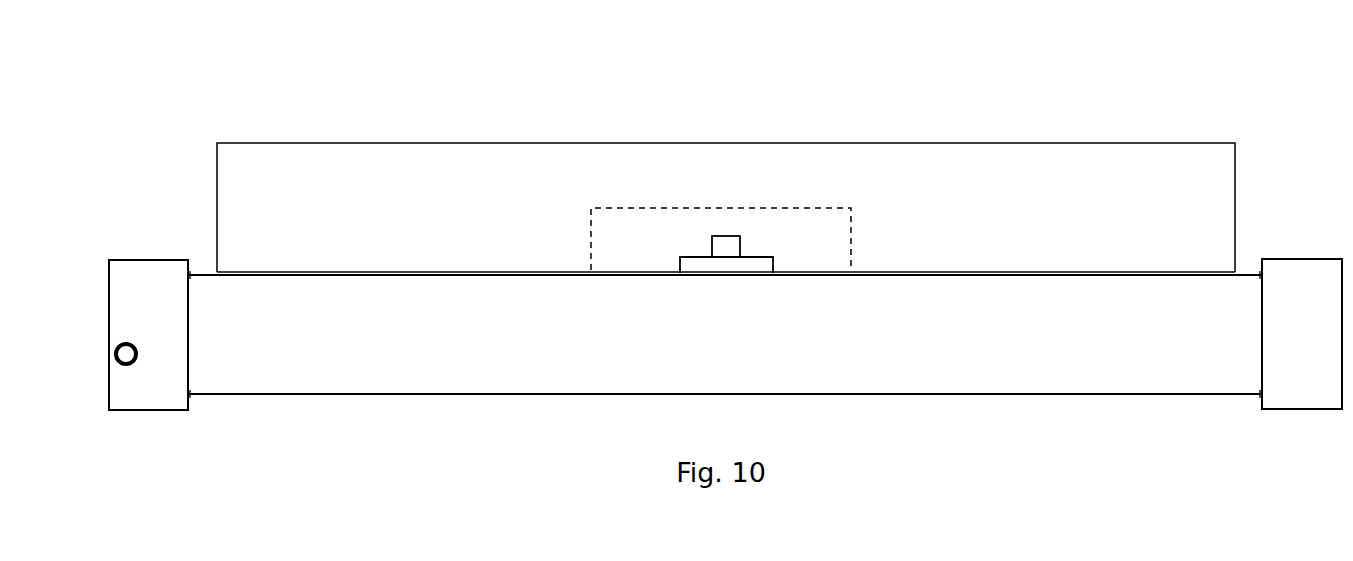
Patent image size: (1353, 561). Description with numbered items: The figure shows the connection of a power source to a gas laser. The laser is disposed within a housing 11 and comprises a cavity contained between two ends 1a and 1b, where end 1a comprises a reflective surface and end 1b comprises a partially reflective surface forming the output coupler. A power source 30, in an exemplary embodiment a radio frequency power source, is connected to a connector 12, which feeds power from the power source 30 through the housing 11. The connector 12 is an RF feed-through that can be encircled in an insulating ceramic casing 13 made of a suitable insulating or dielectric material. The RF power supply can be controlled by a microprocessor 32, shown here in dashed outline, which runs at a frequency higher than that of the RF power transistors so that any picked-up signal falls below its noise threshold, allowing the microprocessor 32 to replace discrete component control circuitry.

The end 1a is at (149, 282).
The end 1b is at (1296, 280).
The housing 11 is at (1003, 290).
The connector 12 is at (727, 247).
The insulating ceramic casing 13 is at (764, 268).
The power source 30 is at (417, 143).
The microprocessor 32 is at (625, 208).